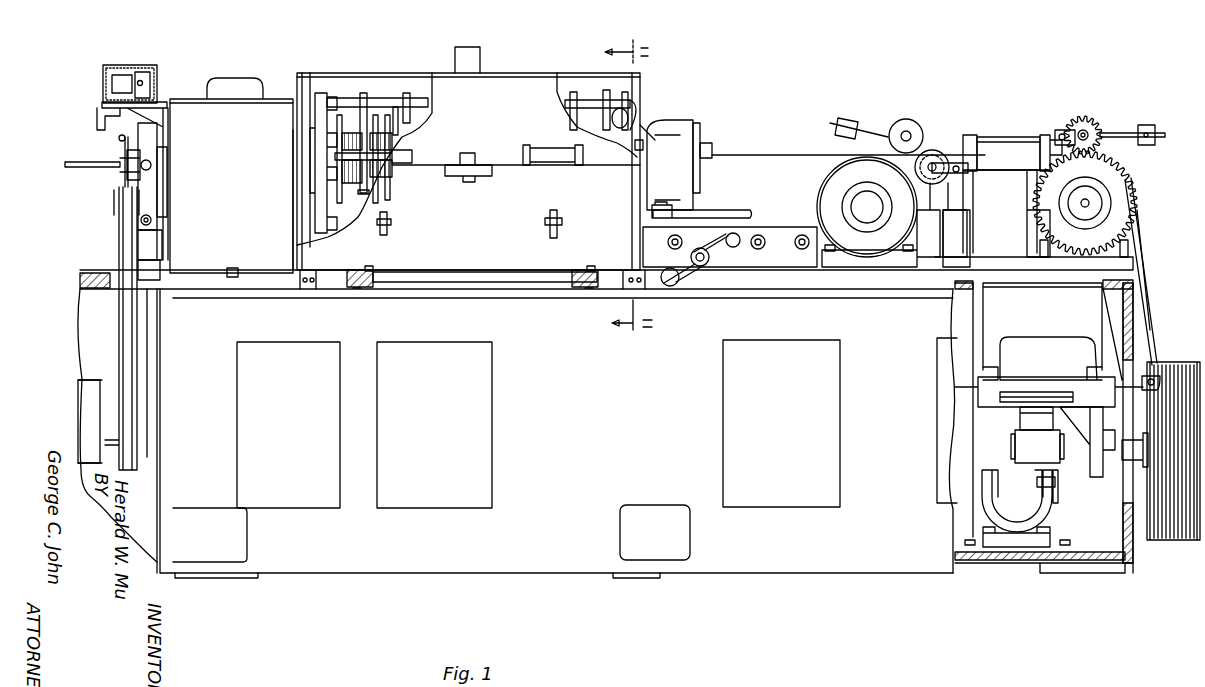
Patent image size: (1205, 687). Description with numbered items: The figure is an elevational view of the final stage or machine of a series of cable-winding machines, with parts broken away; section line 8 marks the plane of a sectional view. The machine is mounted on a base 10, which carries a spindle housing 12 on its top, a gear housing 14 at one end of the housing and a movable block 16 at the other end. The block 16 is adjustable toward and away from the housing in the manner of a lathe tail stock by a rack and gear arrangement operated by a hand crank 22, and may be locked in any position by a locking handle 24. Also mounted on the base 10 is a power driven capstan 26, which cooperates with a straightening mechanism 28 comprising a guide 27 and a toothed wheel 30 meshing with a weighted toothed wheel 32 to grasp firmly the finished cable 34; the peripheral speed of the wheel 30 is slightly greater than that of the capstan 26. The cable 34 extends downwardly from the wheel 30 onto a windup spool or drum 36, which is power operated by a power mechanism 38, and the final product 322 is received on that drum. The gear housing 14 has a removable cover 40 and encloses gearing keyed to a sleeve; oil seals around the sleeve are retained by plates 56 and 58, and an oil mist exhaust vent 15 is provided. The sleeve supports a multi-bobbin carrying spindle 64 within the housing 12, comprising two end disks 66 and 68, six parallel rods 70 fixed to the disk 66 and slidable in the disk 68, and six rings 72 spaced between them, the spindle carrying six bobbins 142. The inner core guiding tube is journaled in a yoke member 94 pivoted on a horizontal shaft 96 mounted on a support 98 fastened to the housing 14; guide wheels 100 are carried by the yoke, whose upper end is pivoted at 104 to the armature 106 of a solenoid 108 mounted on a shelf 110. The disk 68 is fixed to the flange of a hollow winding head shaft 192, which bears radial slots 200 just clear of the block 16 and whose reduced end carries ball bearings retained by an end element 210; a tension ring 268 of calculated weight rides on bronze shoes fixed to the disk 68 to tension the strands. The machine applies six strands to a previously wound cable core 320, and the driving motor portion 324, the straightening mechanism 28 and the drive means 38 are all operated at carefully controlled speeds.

The base 10 is at (400, 560).
The spindle housing 12 is at (537, 94).
The gear housing 14 is at (238, 98).
The oil mist exhaust vent 15 is at (475, 67).
The movable block 16 is at (690, 125).
The hand crank 22 is at (672, 290).
The locking handle 24 is at (710, 213).
The power driven capstan 26 is at (880, 238).
The guide 27 is at (1002, 138).
The straightening mechanism 28 is at (973, 135).
The toothed wheel 30 is at (1120, 202).
The weighted toothed wheel 32 is at (1082, 116).
The finished cable 34 is at (1140, 220).
The windup spool or drum 36 is at (1145, 553).
The power mechanism 38 is at (1005, 438).
The removable cover 40 is at (210, 80).
The plate 56 is at (163, 210).
The plate 58 is at (292, 136).
The multi-bobbin carrying spindle 64 is at (363, 90).
The end disk 66 is at (323, 95).
The end disk 68 is at (615, 95).
The rods 70 is at (390, 100).
The rings 72 is at (408, 92).
The yoke member 94 is at (150, 177).
The horizontal shaft 96 is at (135, 222).
The support 98 is at (160, 247).
The guide wheels 100 is at (117, 132).
The pivot 104 is at (144, 77).
The armature 106 is at (140, 80).
The solenoid 108 is at (112, 84).
The shelf 110 is at (165, 102).
The bobbin 142 is at (398, 131).
The hollow winding head shaft 192 is at (635, 150).
The radial slots 200 is at (660, 130).
The end element 210 is at (710, 140).
The tension ring 268 is at (645, 125).
The cable core 320 is at (87, 167).
The final product 322 is at (782, 155).
The driving motor portion 324 is at (96, 410).
The section line 8 is at (628, 194).